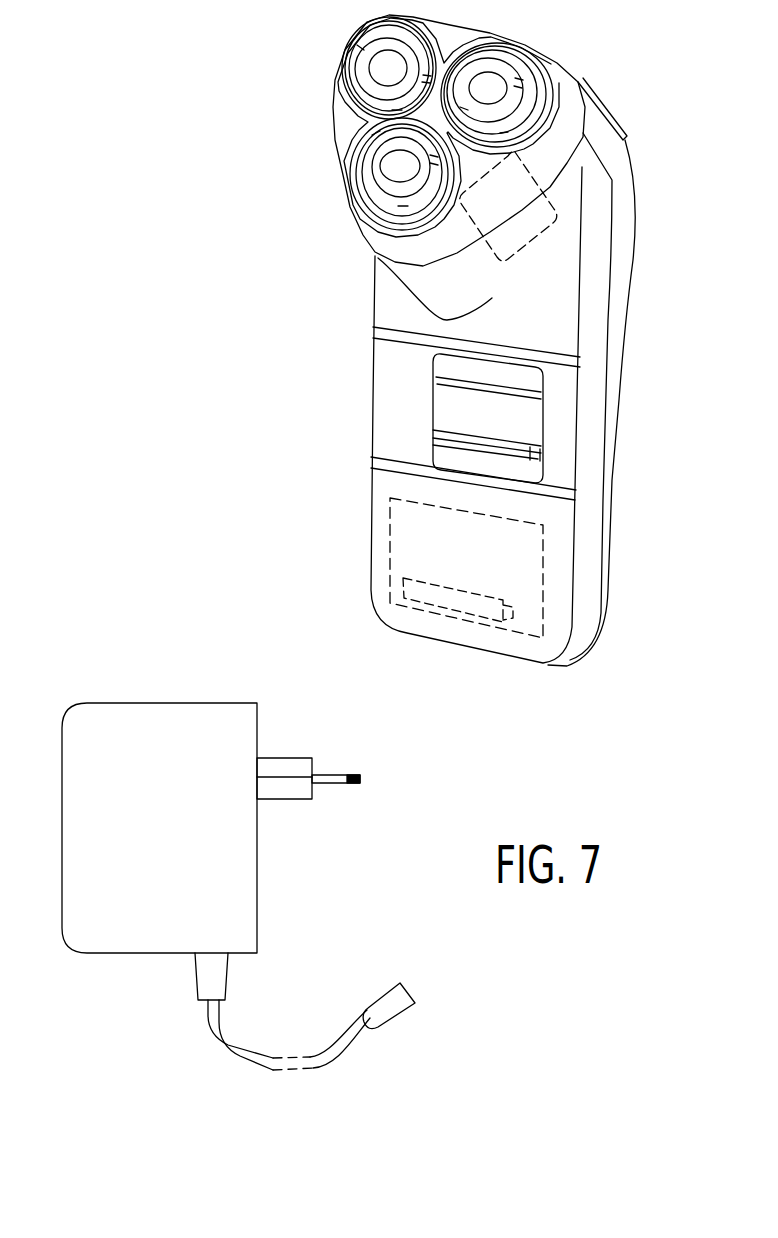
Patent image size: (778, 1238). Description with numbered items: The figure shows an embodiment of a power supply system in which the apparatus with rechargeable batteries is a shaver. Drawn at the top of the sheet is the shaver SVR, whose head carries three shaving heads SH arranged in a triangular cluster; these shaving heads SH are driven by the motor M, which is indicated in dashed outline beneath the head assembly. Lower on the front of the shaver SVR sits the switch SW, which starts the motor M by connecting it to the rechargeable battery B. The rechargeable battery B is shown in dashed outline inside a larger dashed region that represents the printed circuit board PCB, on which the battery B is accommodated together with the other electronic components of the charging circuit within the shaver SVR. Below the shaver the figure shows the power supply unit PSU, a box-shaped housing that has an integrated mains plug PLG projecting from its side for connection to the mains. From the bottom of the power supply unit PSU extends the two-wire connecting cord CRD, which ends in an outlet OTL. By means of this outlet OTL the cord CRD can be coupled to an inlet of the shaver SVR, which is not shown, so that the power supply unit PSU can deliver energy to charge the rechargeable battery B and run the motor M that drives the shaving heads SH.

The shaving heads SH is at (355, 50).
The motor M is at (543, 232).
The shaver SVR is at (553, 321).
The switch SW is at (453, 408).
The printed circuit board PCB is at (543, 565).
The rechargeable battery B is at (428, 597).
The power supply unit PSU is at (170, 703).
The mains plug PLG is at (328, 773).
The two-wire connecting cord CRD is at (248, 1038).
The outlet OTL is at (398, 1018).